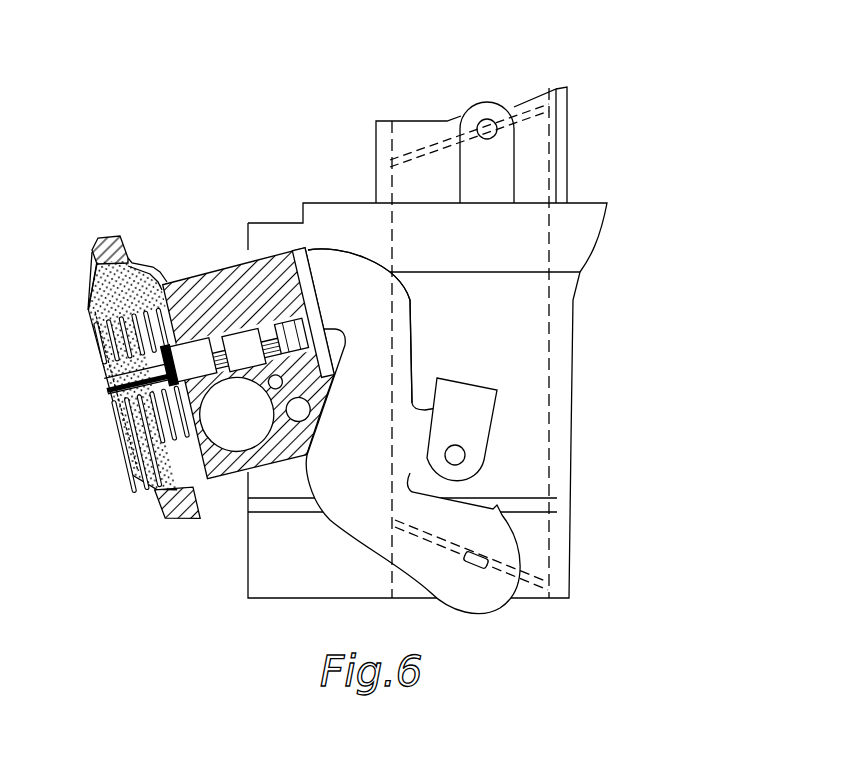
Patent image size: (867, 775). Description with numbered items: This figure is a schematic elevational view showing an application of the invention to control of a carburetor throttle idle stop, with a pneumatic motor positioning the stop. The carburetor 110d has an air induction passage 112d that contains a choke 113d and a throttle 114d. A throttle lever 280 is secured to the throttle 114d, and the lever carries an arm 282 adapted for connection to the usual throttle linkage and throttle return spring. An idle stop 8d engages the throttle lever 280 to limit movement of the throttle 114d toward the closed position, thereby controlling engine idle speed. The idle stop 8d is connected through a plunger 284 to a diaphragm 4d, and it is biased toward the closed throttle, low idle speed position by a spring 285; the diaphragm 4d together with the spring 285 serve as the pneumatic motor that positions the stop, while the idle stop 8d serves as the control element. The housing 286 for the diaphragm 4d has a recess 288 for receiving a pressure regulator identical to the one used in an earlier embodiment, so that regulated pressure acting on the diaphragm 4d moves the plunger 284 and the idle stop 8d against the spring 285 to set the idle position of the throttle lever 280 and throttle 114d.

The diaphragm 4d is at (90, 306).
The idle stop 8d is at (300, 334).
The carburetor 110d is at (556, 194).
The air induction passage 112d is at (545, 146).
The choke 113d is at (527, 115).
The throttle 114d is at (518, 586).
The throttle lever 280 is at (415, 342).
The arm 282 is at (465, 455).
The plunger 284 is at (200, 352).
The spring 285 is at (133, 472).
The housing 286 is at (224, 470).
The recess 288 is at (262, 432).